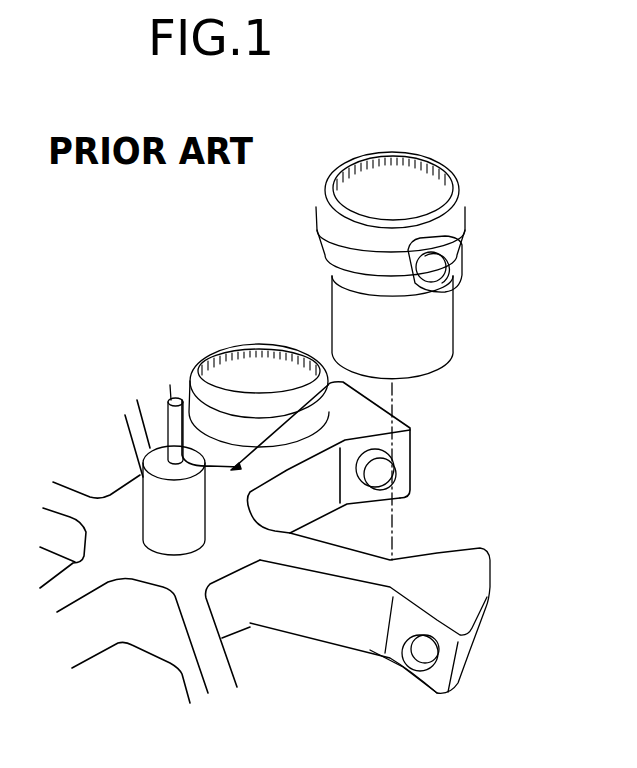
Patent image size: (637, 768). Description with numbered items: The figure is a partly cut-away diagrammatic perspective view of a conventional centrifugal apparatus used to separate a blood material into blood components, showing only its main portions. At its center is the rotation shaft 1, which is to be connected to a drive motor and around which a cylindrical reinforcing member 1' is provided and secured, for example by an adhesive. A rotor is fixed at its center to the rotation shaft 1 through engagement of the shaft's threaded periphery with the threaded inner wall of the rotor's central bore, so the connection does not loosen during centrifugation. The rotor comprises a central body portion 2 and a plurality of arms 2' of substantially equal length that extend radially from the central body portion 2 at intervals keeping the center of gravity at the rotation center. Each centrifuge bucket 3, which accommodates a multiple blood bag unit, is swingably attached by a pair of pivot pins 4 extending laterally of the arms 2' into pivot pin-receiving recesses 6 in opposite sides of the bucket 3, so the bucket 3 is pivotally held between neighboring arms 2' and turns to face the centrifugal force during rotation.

The rotation shaft 1 is at (141, 403).
The cylindrical reinforcing member 1' is at (244, 604).
The central body portion 2 is at (137, 494).
The arms 2' is at (392, 613).
The centrifuge bucket 3 is at (233, 346).
The pivot pin 4 is at (378, 482).
The pivot pin-receiving recess 6 is at (432, 273).